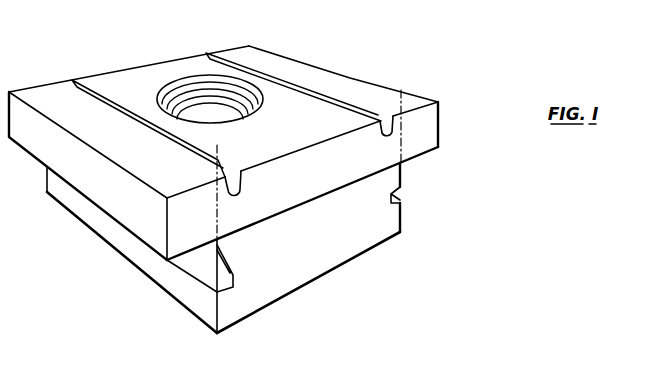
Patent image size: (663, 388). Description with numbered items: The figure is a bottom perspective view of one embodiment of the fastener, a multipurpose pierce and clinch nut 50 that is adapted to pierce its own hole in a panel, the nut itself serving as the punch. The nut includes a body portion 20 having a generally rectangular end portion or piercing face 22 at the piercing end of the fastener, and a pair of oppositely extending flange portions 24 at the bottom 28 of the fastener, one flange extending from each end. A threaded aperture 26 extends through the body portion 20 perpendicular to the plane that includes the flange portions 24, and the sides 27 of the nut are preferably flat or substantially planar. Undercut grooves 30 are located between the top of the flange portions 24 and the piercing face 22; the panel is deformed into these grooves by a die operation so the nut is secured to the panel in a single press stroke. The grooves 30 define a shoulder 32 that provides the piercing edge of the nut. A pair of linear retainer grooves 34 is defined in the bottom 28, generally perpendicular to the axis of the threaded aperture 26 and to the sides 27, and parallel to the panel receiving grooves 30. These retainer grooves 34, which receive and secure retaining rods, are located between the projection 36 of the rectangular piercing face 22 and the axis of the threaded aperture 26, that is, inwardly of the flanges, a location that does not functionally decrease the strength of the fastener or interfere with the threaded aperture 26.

The body portion 20 is at (322, 257).
The piercing face 22 is at (306, 286).
The flange portions 24 is at (430, 135).
The threaded aperture 26 is at (253, 110).
The sides 27 is at (305, 192).
The bottom 28 is at (378, 86).
The undercut grooves 30 is at (401, 190).
The shoulder 32 is at (402, 221).
The retainer grooves 34 is at (72, 80).
The projection 36 is at (403, 91).
The pierce nut 50 is at (323, 54).